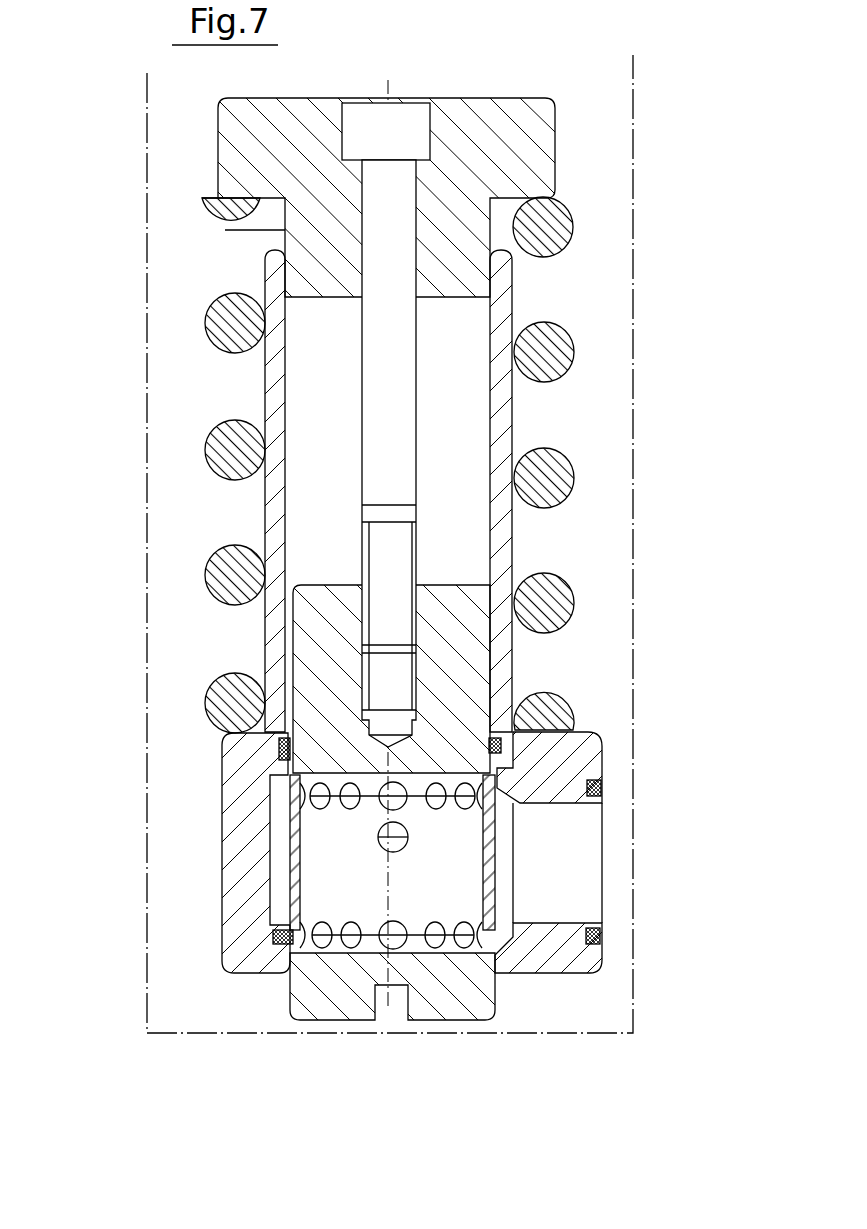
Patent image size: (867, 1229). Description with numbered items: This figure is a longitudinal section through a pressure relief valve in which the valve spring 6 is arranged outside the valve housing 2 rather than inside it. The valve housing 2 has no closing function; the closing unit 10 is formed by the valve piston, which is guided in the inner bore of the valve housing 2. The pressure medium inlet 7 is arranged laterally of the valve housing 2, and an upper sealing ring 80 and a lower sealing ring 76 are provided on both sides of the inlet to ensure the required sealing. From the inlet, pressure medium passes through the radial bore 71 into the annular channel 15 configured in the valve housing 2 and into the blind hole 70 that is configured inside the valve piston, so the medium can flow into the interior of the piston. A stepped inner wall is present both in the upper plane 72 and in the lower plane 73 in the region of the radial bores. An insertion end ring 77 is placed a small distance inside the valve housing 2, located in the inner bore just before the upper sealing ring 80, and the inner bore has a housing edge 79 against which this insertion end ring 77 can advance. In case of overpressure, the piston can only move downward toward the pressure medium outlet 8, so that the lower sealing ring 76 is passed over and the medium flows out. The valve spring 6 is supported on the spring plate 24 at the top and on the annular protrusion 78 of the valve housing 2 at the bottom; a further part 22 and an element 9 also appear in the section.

The valve housing 2 is at (265, 632).
The valve spring 6 is at (575, 357).
The pressure medium inlet 7 is at (575, 885).
The pressure medium outlet 8 is at (185, 1008).
The adjusting screw 9 is at (493, 687).
The closing unit 10 is at (500, 596).
The annular channel 15 is at (272, 871).
The ring 22 is at (500, 768).
The spring plate 24 is at (510, 108).
The blind hole 70 is at (465, 835).
The radial bore 71 is at (493, 790).
The upper plane 72 is at (290, 795).
The lower plane 73 is at (285, 940).
The lower sealing ring 76 is at (603, 972).
The insertion end ring 77 is at (300, 793).
The annular protrusion 78 is at (285, 745).
The housing edge 79 is at (290, 768).
The upper sealing ring 80 is at (500, 746).